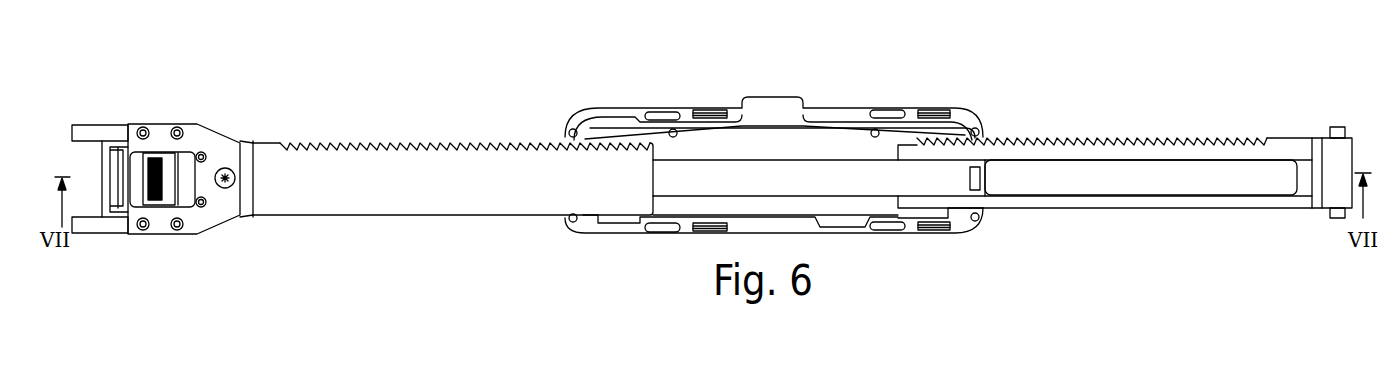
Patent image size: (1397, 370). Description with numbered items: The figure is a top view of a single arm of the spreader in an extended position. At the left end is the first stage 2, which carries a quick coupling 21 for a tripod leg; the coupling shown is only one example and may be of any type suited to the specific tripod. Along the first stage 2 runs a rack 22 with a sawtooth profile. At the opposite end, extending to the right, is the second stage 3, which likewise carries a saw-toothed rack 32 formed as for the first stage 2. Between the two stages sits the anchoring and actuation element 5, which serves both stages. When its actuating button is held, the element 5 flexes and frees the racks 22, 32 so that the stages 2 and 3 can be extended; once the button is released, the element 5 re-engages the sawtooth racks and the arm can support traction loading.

The first stage 2 is at (455, 195).
The second stage 3 is at (1243, 207).
The anchoring and actuation element 5 is at (755, 97).
The quick coupling 21 is at (93, 124).
The rack 22 is at (417, 142).
The saw-toothed rack 32 is at (1107, 140).